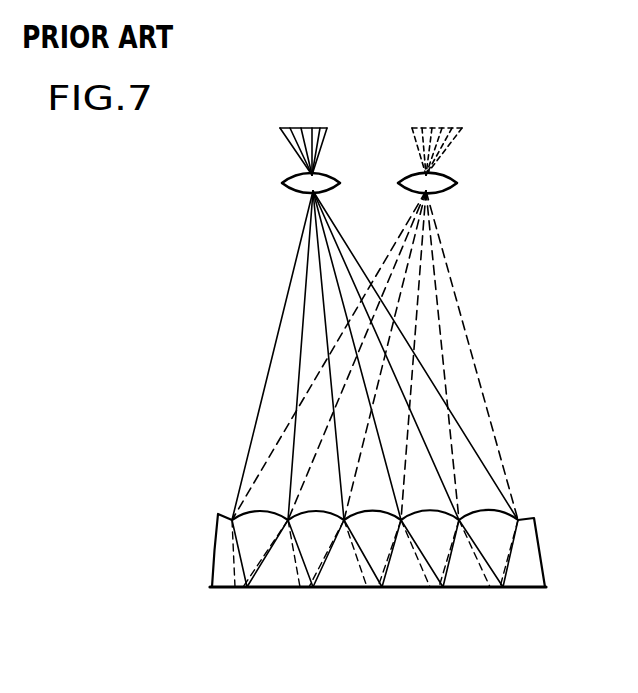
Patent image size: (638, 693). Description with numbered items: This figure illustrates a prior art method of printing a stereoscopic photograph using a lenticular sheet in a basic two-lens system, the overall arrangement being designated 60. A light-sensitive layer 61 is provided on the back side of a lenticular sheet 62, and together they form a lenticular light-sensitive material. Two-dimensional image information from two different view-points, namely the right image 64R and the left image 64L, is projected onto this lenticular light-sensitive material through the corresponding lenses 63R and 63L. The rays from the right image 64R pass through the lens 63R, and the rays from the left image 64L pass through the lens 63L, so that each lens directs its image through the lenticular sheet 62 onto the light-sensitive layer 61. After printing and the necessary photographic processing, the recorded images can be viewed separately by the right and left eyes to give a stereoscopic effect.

The prior art stereoscopic display system 60 is at (378, 80).
The light-sensitive layer 61 is at (525, 590).
The lenticular sheet 62 is at (533, 552).
The lens 63R is at (283, 184).
The lens 63L is at (458, 184).
The right image 64R is at (287, 127).
The left image 64L is at (462, 127).